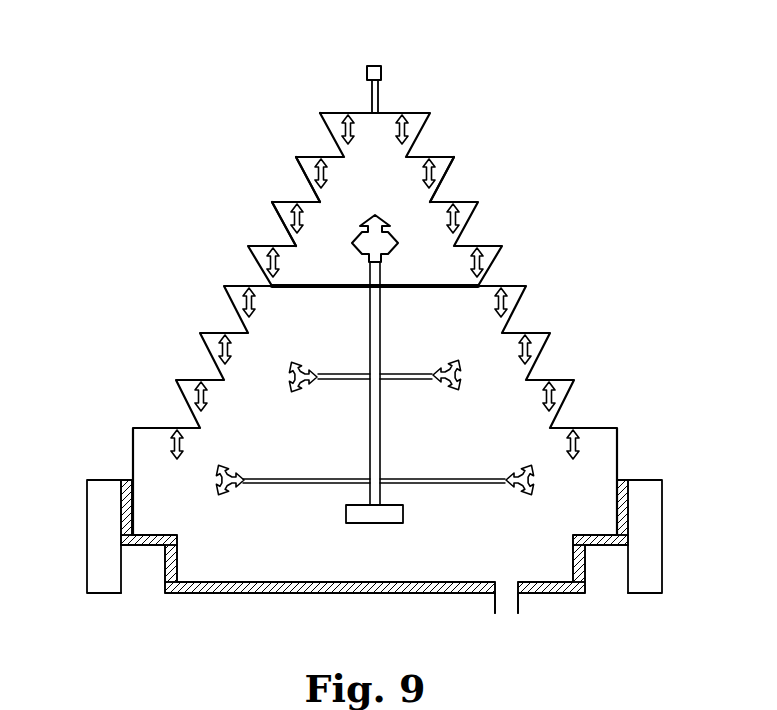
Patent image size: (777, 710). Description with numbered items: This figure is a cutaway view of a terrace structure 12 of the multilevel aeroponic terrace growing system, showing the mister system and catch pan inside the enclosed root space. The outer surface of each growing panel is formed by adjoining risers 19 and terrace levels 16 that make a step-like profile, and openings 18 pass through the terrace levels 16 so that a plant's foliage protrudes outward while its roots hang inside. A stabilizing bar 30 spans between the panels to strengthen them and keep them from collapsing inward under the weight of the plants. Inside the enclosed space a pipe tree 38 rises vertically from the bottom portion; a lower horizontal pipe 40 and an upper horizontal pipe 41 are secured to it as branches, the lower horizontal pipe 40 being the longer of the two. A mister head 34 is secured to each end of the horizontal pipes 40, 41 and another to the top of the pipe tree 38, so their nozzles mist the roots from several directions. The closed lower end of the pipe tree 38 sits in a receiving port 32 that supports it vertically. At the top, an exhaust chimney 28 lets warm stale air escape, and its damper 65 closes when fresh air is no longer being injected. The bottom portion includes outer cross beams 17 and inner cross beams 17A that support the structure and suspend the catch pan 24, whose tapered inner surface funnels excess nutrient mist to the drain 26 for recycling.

The terrace structure 12 is at (173, 233).
The terrace level 16 is at (297, 204).
The outer cross beam 17 is at (103, 583).
The inner cross beam 17A is at (152, 583).
The opening 18 is at (322, 158).
The riser 19 is at (443, 183).
The catch pan 24 is at (228, 583).
The drain 26 is at (510, 600).
The exhaust chimney 28 is at (381, 91).
The stabilizing bar 30 is at (413, 285).
The receiving port 32 is at (390, 518).
The mister head 34 is at (460, 362).
The pipe tree 38 is at (368, 342).
The lower horizontal pipe 40 is at (297, 482).
The upper horizontal pipe 41 is at (343, 382).
The damper 65 is at (371, 66).